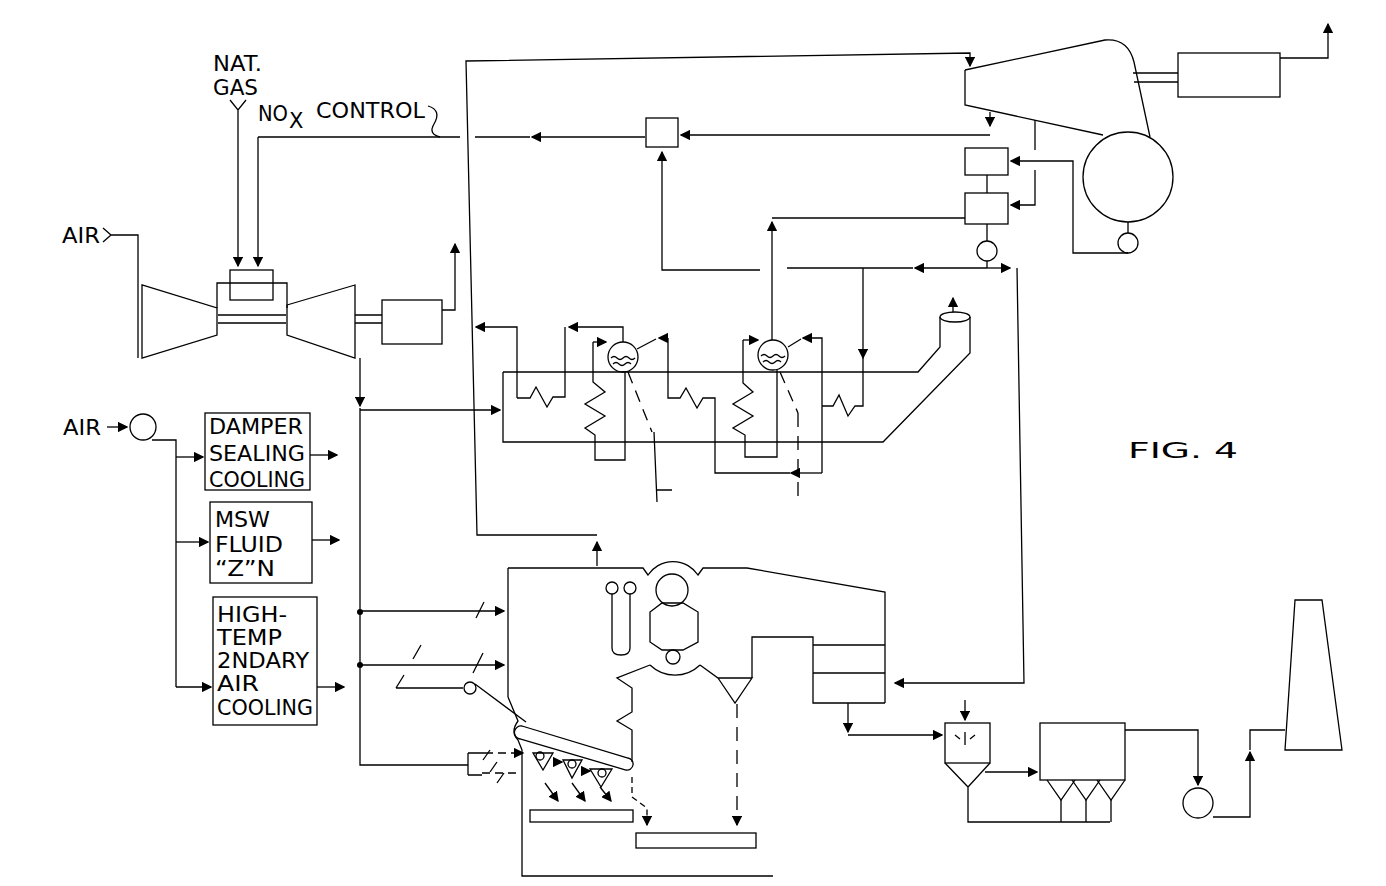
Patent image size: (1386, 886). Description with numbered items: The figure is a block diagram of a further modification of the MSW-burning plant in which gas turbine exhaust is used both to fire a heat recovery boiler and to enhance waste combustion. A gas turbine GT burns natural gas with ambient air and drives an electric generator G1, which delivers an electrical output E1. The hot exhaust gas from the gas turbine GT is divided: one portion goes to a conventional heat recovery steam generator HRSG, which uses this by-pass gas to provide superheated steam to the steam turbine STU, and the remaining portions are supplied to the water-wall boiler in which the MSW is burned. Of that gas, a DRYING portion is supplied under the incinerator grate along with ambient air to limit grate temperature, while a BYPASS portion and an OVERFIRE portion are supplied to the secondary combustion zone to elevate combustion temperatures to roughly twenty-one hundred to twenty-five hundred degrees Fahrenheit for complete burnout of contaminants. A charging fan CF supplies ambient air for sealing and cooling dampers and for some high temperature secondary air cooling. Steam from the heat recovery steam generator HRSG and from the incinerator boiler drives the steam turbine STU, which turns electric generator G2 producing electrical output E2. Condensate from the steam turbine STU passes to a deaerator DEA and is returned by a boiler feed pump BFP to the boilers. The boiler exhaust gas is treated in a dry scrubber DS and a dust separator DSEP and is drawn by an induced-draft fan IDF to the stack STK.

The gas turbine GT is at (300, 340).
The electric generator G1 is at (416, 300).
The electrical output E1 is at (441, 265).
The steam turbine STU is at (1050, 45).
The electric generator G2 is at (1282, 73).
The electrical output E2 is at (1324, 38).
The deaerator DEA is at (965, 208).
The boiler feed pump BFP is at (998, 250).
The heat recovery steam generator HRSG is at (902, 424).
The charging fan CF is at (133, 440).
The bypass gas supply BYPASS is at (464, 611).
The overfire gas supply OVERFIRE is at (484, 633).
The municipal solid waste MSW is at (442, 690).
The drying gas supply DRYING is at (460, 765).
The dry scrubber DS is at (1027, 757).
The dust separator DSEP is at (1052, 723).
The induced-draft fan IDF is at (1192, 818).
The stack STK is at (1287, 677).